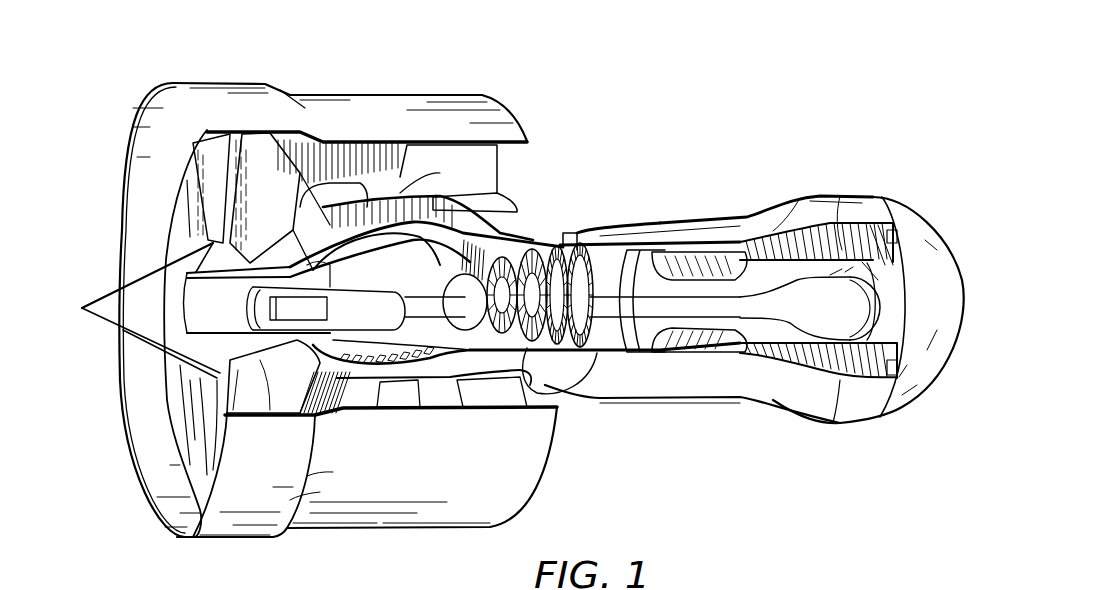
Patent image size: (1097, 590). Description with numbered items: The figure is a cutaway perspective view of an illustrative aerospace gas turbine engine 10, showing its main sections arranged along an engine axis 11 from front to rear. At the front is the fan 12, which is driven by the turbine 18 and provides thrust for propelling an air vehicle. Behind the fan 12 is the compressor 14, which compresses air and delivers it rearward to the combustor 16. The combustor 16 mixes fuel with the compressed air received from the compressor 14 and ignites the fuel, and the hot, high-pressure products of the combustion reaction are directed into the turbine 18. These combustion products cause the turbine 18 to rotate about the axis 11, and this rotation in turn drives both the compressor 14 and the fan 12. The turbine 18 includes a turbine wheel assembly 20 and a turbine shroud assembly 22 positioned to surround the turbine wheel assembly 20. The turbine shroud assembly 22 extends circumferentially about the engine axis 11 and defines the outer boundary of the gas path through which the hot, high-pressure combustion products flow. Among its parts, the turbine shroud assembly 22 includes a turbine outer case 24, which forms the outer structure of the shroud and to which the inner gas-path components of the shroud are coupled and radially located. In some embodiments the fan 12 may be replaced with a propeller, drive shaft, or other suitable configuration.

The gas turbine engine 10 is at (840, 94).
The axis 11 is at (82, 308).
The fan 12 is at (186, 185).
The compressor 14 is at (527, 257).
The combustor 16 is at (687, 253).
The turbine 18 is at (770, 190).
The turbine wheel assembly 20 is at (770, 323).
The turbine shroud assembly 22 is at (794, 356).
The turbine outer case 24 is at (813, 395).